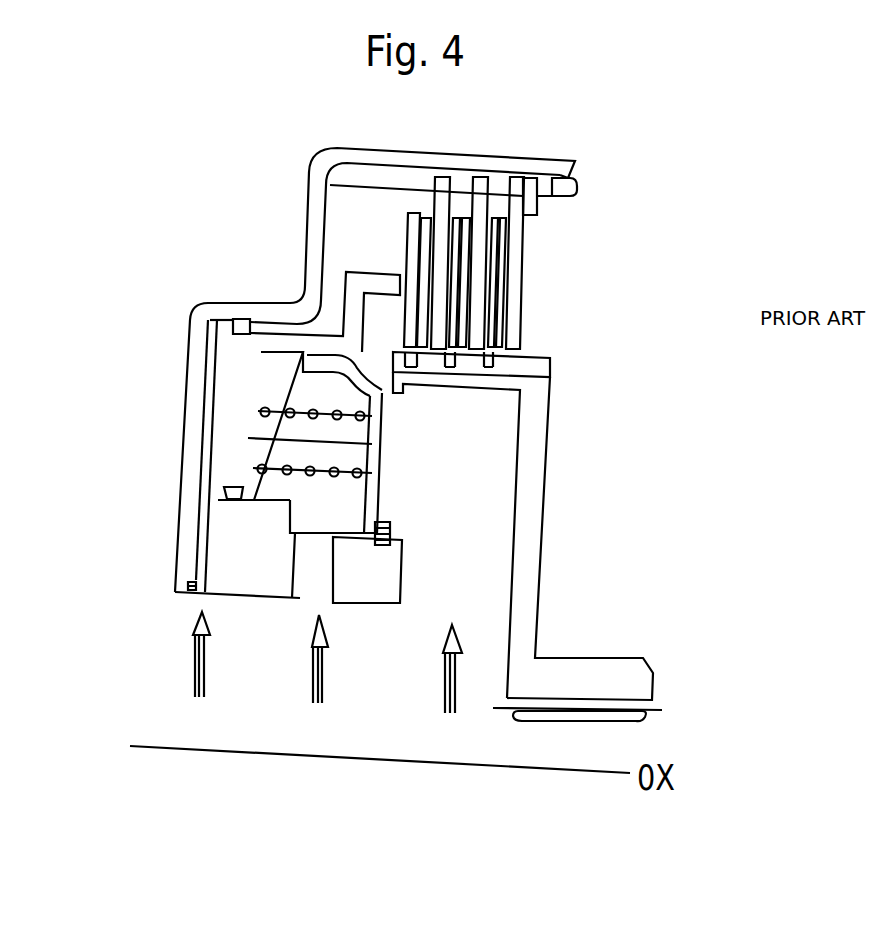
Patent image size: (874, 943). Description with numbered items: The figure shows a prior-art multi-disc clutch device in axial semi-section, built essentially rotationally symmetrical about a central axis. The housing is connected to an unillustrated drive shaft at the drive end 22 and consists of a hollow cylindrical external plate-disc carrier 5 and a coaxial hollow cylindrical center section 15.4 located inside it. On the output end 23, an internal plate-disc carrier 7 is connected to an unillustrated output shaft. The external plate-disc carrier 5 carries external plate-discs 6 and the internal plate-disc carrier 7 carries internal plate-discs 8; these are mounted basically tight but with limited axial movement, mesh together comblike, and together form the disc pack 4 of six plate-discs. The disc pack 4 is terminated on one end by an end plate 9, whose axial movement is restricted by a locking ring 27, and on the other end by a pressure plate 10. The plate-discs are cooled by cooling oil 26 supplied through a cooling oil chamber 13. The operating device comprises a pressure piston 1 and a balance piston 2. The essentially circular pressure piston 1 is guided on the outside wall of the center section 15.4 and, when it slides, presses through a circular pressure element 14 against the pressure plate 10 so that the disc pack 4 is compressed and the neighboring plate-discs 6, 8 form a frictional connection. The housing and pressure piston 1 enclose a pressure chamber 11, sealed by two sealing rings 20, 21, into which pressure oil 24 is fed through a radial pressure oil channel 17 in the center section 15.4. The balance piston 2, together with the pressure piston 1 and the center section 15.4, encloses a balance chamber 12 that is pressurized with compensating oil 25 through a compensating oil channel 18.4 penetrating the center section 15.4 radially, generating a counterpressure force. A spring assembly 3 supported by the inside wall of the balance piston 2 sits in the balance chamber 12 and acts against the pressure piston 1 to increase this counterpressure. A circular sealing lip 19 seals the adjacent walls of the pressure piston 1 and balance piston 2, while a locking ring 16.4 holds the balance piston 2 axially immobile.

The pressure piston 1 is at (235, 408).
The balance piston 2 is at (375, 482).
The spring assembly 3 is at (293, 455).
The disc pack 4 is at (475, 297).
The external plate-disc carrier 5 is at (523, 163).
The external plate-disc 6 is at (478, 203).
The internal plate-disc carrier 7 is at (525, 522).
The internal plate-disc 8 is at (492, 336).
The end plate 9 is at (515, 290).
The pressure plate 10 is at (413, 258).
The pressure chamber 11 is at (200, 330).
The balance chamber 12 is at (280, 355).
The cooling oil chamber 13 is at (487, 416).
The pressure element 14 is at (358, 272).
The center section 15.4 is at (200, 590).
The locking ring 16.4 is at (390, 531).
The pressure oil channel 17 is at (270, 565).
The compensating oil channel 18.4 is at (318, 522).
The sealing lip 19 is at (293, 343).
The sealing ring 20 is at (238, 320).
The sealing ring 21 is at (228, 488).
The drive end 22 is at (135, 747).
The output end 23 is at (596, 698).
The pressure oil 24 is at (205, 688).
The compensating oil 25 is at (320, 703).
The cooling oil 26 is at (457, 693).
The locking ring 27 is at (528, 206).